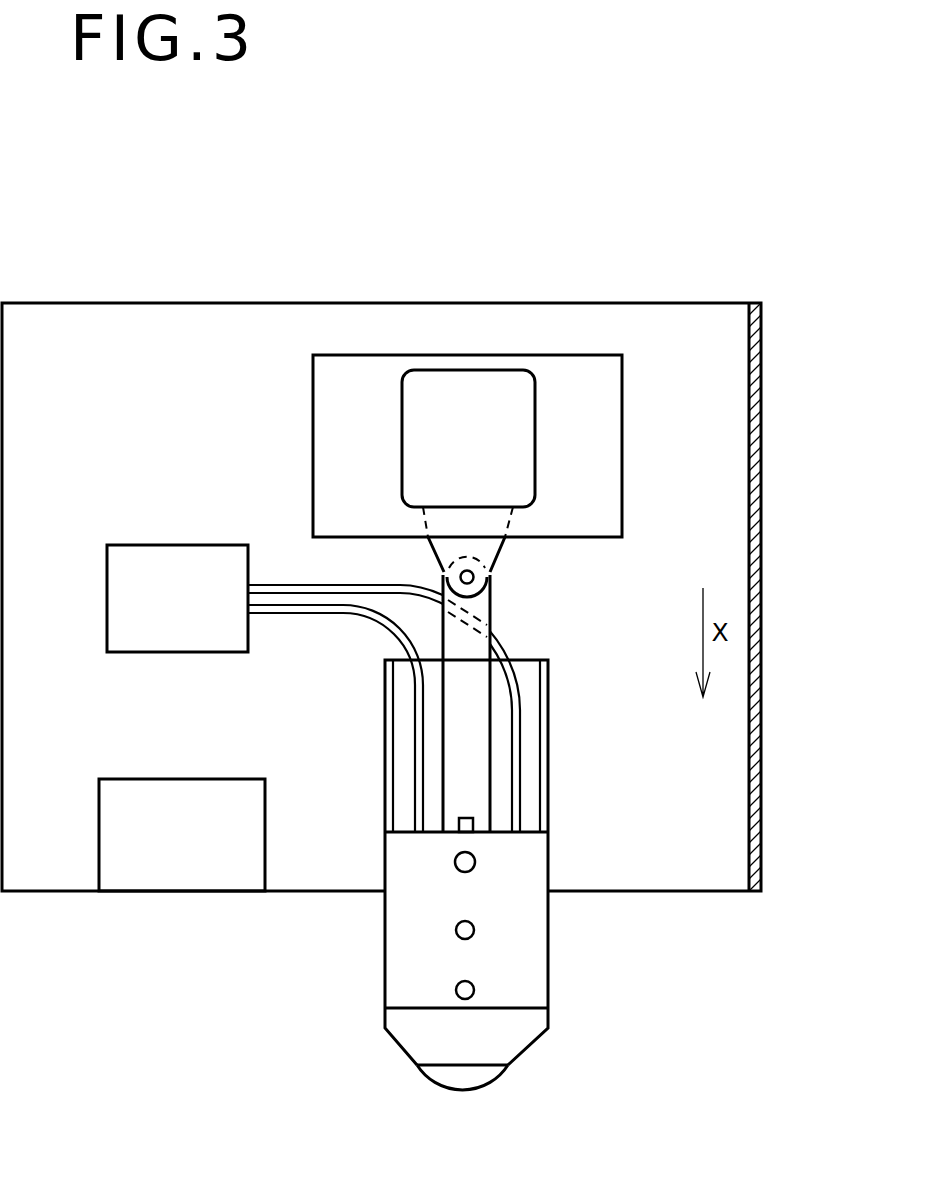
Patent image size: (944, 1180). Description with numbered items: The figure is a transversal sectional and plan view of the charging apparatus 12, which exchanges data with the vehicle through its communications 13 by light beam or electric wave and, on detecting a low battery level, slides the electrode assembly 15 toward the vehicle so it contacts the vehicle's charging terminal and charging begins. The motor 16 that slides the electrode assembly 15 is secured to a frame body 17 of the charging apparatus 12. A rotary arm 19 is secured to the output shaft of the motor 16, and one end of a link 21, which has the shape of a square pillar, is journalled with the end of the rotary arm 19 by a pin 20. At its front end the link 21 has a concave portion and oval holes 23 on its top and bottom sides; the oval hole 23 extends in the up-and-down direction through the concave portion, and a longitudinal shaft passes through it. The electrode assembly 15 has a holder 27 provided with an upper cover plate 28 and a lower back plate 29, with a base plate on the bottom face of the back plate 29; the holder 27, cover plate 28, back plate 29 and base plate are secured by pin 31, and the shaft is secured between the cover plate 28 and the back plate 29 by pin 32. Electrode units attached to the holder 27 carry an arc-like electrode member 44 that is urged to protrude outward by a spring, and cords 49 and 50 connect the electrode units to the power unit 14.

The charging apparatus 12 is at (632, 286).
The communications 13 is at (183, 858).
The power unit 14 is at (160, 565).
The electrode assembly 15 is at (548, 800).
The motor 16 is at (467, 395).
The frame body 17 is at (745, 855).
The rotary arm 19 is at (490, 542).
The pin 20 is at (474, 577).
The link 21 is at (490, 603).
The oval hole 23 is at (462, 815).
The holder 27 is at (518, 1027).
The cover plate 28 is at (528, 948).
The back plate 29 is at (548, 752).
The pin 31 is at (455, 930).
The pin 32 is at (475, 862).
The electrode member 44 is at (440, 1077).
The cord 49 is at (325, 612).
The cord 50 is at (290, 590).